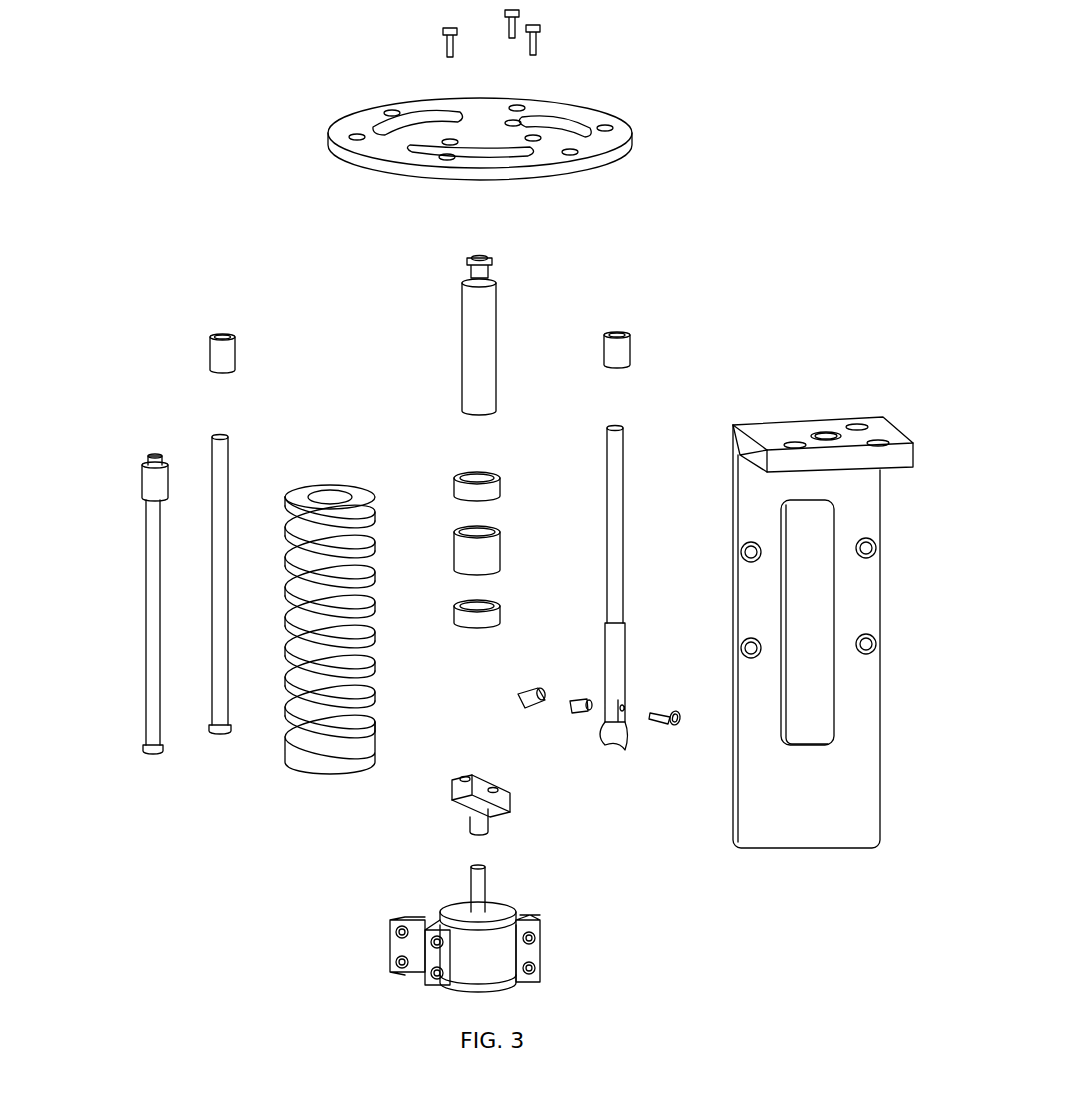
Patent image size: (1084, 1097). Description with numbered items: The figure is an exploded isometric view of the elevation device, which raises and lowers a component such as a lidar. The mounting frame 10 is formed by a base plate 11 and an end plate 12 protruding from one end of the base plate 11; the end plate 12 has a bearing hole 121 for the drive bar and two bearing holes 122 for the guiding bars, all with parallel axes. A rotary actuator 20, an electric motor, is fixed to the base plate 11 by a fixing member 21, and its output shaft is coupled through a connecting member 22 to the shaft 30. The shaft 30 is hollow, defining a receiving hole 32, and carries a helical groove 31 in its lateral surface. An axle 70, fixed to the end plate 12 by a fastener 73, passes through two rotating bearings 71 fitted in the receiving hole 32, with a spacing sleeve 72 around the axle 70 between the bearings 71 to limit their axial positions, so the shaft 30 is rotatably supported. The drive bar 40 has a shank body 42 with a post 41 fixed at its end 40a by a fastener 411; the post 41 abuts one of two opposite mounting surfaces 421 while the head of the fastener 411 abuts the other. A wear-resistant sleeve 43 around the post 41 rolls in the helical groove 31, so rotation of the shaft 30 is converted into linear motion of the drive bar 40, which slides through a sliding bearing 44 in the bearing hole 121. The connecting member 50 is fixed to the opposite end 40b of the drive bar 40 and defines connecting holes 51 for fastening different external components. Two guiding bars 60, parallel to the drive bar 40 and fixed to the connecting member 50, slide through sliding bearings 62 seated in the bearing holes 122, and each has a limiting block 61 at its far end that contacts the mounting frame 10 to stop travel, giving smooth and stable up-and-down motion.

The mounting frame 10 is at (827, 619).
The base plate 11 is at (830, 790).
The end plate 12 is at (768, 432).
The bearing hole 121 is at (880, 441).
The bearing holes 122 is at (857, 426).
The rotary actuator 20 is at (500, 910).
The fixing member 21 is at (490, 956).
The connecting member 22 is at (510, 806).
The shaft 30 is at (320, 617).
The helical groove 31 is at (325, 670).
The receiving hole 32 is at (331, 495).
The drive bar 40 is at (649, 566).
The end of the drive bar 40a is at (622, 706).
The end of the drive bar 40b is at (618, 430).
The post 41 is at (579, 708).
The fastener 411 is at (667, 722).
The shank body 42 is at (617, 572).
The mounting surfaces 421 is at (620, 740).
The sleeve 43 is at (535, 703).
The sliding bearing 44 is at (620, 348).
The connecting member 50 is at (352, 112).
The connecting holes 51 is at (605, 127).
The guiding bar 60 is at (217, 630).
The limiting block 61 is at (220, 735).
The sliding bearing 62 is at (222, 352).
The axle 70 is at (476, 318).
The rotating bearing 71 is at (482, 487).
The spacing sleeve 72 is at (488, 553).
The fastener 73 is at (468, 262).